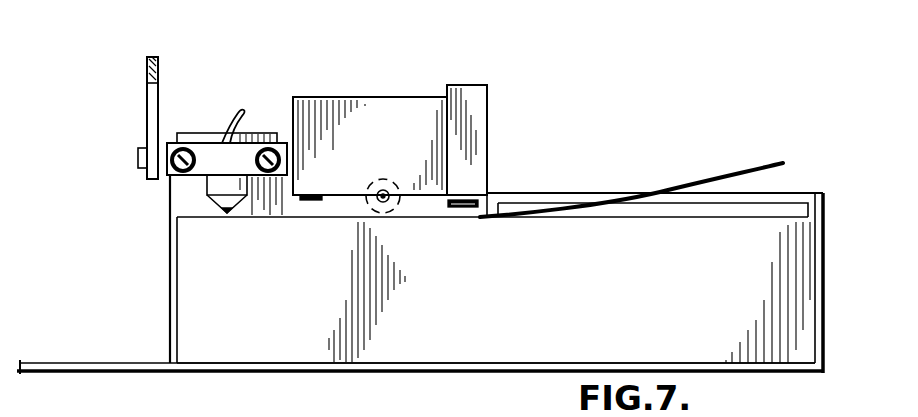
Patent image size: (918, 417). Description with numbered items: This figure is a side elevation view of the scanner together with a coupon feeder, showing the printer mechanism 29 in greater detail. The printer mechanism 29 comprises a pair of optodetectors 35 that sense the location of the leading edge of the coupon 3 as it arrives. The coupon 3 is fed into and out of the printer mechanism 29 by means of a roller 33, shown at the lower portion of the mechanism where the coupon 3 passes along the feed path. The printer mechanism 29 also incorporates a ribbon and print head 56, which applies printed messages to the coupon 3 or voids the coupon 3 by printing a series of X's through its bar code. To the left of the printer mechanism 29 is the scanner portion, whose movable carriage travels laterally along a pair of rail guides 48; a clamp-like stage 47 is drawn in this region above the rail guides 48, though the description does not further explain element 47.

The coupon 3 is at (729, 172).
The printer mechanism 29 is at (407, 103).
The ribbon and print head 56 is at (486, 113).
The roller 33 is at (373, 214).
The optodetectors 35 is at (310, 214).
The stage 47 is at (192, 128).
The rail guides 48 is at (180, 176).